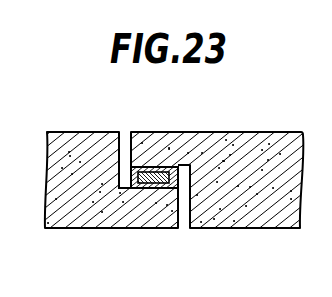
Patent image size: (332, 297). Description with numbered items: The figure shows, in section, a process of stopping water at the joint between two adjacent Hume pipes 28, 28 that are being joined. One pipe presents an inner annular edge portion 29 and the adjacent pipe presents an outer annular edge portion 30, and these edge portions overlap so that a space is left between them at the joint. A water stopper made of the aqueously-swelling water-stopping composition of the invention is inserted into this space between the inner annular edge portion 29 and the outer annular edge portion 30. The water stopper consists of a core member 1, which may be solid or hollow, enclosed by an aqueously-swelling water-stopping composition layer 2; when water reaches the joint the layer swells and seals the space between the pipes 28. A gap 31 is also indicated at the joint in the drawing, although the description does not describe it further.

The core member 1 is at (172, 140).
The aqueously-swelling water-stopping composition layer 2 is at (136, 229).
The Hume pipe 28 is at (81, 229).
The inner annular edge portion 29 is at (158, 229).
The outer annular edge portion 30 is at (158, 171).
The joint slot 31 is at (118, 168).